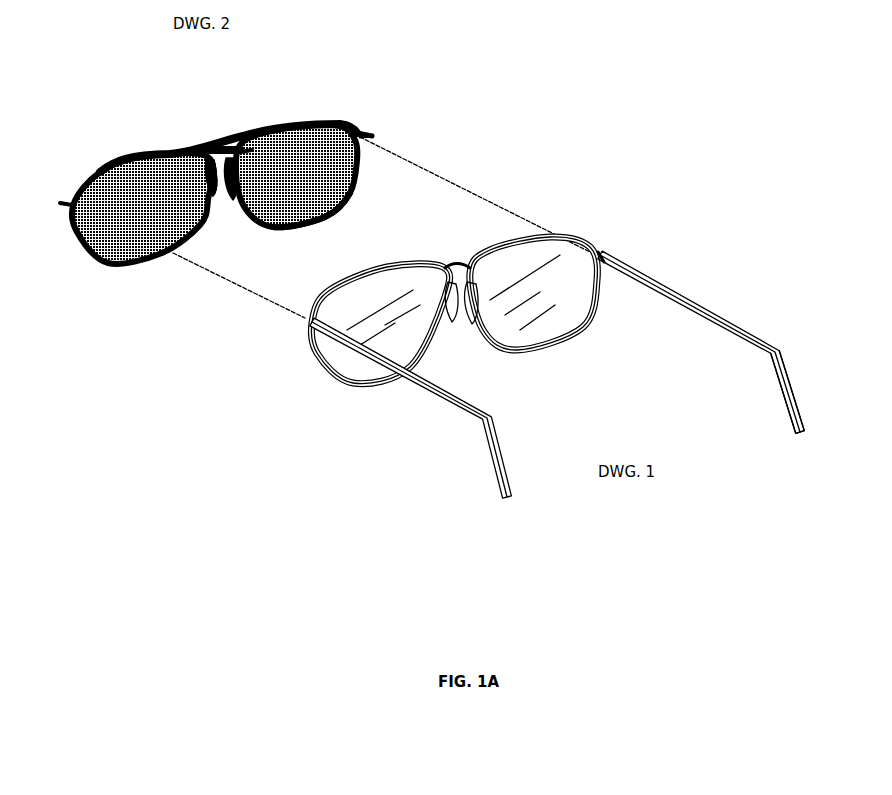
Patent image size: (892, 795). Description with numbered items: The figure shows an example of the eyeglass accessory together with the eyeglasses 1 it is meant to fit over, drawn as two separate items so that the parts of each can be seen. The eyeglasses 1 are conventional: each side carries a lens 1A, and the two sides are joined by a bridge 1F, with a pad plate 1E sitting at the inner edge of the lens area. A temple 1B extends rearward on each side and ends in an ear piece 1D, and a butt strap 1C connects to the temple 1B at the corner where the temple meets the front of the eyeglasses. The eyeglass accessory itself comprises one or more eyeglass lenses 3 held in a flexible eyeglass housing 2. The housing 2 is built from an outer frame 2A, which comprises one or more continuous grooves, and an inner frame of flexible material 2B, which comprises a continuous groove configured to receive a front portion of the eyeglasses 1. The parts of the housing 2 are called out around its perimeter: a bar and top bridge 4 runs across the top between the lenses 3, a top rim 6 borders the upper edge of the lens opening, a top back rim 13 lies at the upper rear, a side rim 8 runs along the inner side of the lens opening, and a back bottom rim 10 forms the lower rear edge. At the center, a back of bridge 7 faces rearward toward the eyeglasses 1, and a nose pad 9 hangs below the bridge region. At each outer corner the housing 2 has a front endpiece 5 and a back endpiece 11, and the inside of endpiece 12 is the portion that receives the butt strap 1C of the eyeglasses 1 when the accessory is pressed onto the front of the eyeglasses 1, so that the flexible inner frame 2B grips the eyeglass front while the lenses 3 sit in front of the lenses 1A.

The eyeglasses 1 is at (270, 327).
The lens 1A is at (545, 295).
The temple 1B is at (705, 310).
The butt strap 1C is at (612, 258).
The ear piece 1D is at (763, 388).
The pad plate 1E is at (453, 330).
The bridge 1F is at (455, 266).
The flexible eyeglass housing 2 is at (73, 197).
The outer frame 2A is at (142, 151).
The inner frame of flexible material 2B is at (216, 145).
The lens 3 is at (304, 134).
The bar and top bridge 4 is at (282, 126).
The front endpiece 5 is at (372, 136).
The top rim 6 is at (101, 170).
The back of bridge 7 is at (206, 152).
The side rim 8 is at (239, 202).
The nose pad 9 is at (211, 200).
The back bottom rim 10 is at (318, 222).
The back endpiece 11 is at (364, 150).
The inside of endpiece 12 is at (70, 208).
The top back rim 13 is at (247, 134).